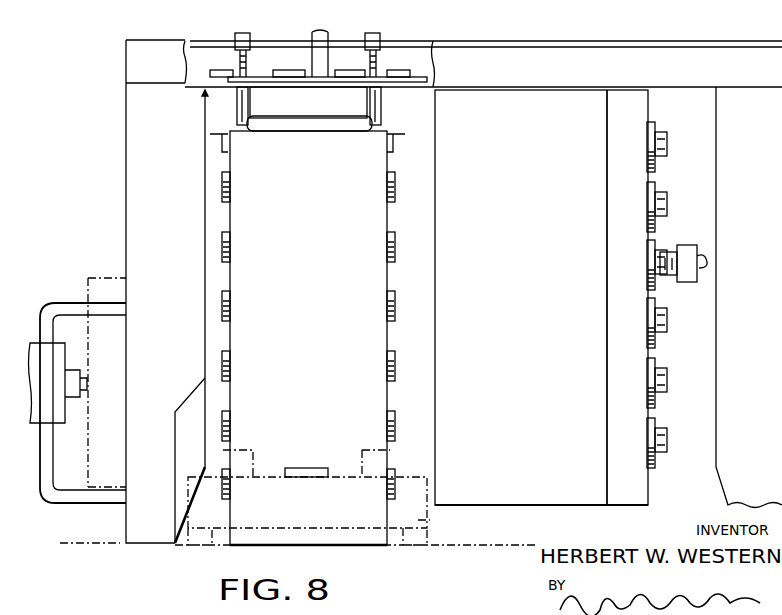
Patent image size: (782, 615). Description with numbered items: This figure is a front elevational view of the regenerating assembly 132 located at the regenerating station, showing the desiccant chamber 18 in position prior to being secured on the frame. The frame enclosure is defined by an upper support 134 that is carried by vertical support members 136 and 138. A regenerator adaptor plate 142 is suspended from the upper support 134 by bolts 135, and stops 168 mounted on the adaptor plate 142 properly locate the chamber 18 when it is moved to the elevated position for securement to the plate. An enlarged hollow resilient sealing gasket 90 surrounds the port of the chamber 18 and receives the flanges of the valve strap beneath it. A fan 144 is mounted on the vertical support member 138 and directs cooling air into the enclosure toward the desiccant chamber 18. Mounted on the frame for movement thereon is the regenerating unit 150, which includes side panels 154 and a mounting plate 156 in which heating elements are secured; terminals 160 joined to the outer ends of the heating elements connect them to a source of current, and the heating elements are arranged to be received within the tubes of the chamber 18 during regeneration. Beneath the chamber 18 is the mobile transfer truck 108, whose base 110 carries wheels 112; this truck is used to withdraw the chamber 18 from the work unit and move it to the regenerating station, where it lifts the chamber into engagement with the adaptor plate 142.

The desiccant chamber 18 is at (384, 280).
The hollow resilient sealing gasket 90 is at (318, 123).
The mobile transfer truck 108 is at (290, 518).
The base 110 is at (420, 521).
The wheels 112 is at (194, 541).
The regenerating assembly 132 is at (116, 111).
The upper support 134 is at (586, 52).
The bolts 135 is at (242, 32).
The vertical support member 136 is at (727, 464).
The vertical support member 138 is at (140, 233).
The regenerator adaptor plate 142 is at (258, 78).
The fan 144 is at (62, 501).
The regenerating unit 150 is at (668, 174).
The side panel 154 is at (552, 498).
The mounting plate 156 is at (632, 500).
The terminals 160 is at (687, 245).
The stops 168 is at (236, 100).